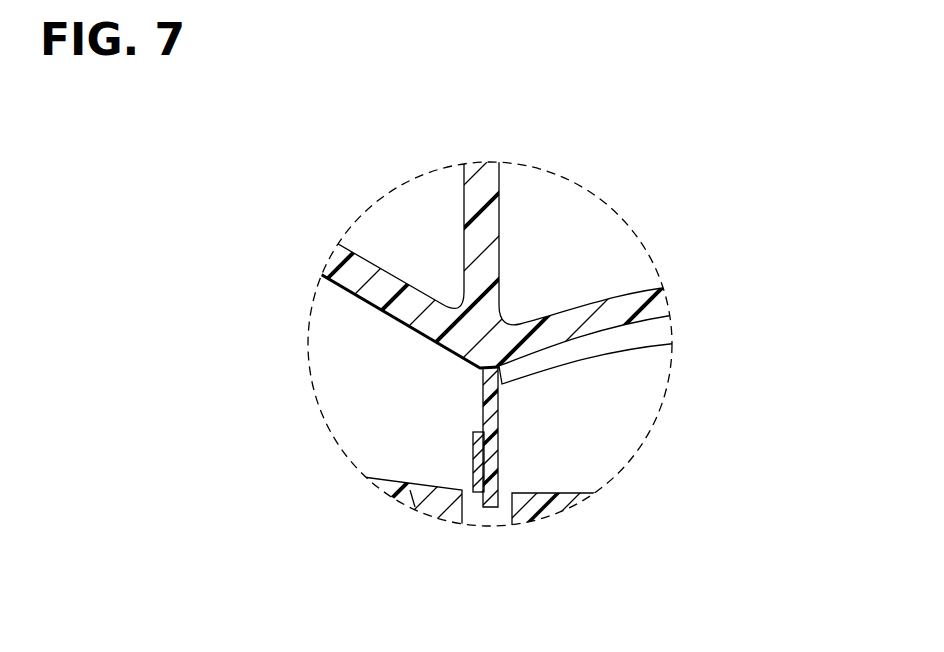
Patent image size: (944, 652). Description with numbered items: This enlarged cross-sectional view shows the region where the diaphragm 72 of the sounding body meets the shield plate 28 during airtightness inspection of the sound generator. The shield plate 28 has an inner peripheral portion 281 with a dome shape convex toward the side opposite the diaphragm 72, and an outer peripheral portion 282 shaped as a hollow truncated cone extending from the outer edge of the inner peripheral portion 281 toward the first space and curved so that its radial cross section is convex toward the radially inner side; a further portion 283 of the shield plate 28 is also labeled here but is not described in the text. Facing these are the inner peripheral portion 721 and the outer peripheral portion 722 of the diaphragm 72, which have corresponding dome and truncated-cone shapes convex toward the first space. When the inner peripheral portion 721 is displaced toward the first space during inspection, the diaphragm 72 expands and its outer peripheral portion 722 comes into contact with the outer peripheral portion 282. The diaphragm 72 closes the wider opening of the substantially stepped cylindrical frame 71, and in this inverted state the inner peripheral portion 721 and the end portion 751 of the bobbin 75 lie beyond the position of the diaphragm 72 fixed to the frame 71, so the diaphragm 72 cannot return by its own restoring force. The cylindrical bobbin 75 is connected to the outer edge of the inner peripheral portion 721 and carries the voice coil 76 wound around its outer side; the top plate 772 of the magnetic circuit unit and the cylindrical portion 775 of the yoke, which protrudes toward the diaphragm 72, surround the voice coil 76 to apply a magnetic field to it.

The shield plate 28 is at (577, 300).
The inner peripheral portion 281 is at (615, 305).
The outer peripheral portion 282 is at (388, 292).
The stem portion 283 is at (487, 222).
The diaphragm 72 is at (485, 373).
The inner peripheral portion 721 is at (623, 348).
The outer peripheral portion 722 is at (392, 322).
The frame 71 is at (403, 494).
The bobbin 75 is at (578, 355).
The end portion 751 is at (497, 388).
The voice coil 76 is at (473, 494).
The top plate 772 is at (532, 511).
The cylindrical portion 775 is at (432, 512).